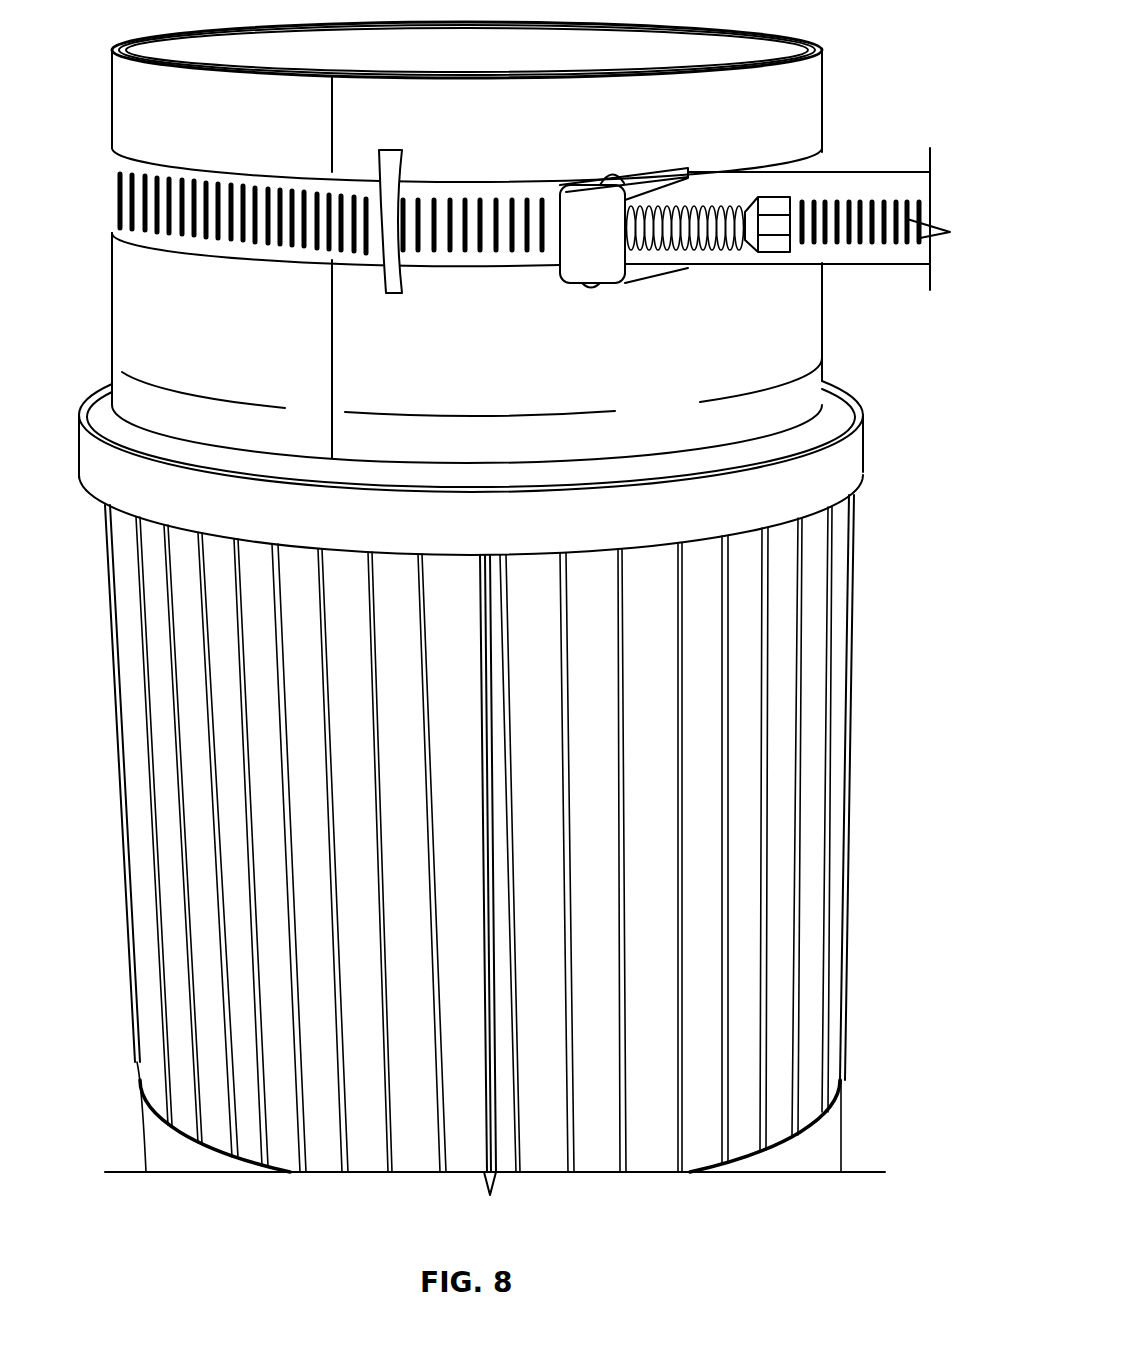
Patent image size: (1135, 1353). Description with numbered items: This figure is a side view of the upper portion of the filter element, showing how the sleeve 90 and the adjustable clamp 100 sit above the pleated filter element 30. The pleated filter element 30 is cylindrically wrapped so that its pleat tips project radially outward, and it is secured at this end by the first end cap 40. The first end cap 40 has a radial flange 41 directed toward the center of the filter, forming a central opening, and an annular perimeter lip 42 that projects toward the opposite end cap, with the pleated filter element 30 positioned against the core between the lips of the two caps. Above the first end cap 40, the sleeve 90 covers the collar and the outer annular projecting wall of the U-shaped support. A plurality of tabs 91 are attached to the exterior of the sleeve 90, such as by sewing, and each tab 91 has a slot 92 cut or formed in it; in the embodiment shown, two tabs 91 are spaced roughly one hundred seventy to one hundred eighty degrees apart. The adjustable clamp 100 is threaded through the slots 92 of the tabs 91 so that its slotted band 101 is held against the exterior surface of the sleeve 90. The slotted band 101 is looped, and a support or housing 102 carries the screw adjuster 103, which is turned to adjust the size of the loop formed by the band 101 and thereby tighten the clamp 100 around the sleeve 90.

The pleated filter element 30 is at (553, 713).
The first end cap 40 is at (444, 456).
The radial flange 41 is at (630, 466).
The annular perimeter lip 42 is at (500, 540).
The sleeve 90 is at (478, 398).
The tab 91 is at (384, 231).
The slot 92 is at (379, 158).
The adjustable clamp 100 is at (531, 206).
The slotted band 101 is at (242, 236).
The housing 102 is at (645, 180).
The screw adjuster 103 is at (777, 252).